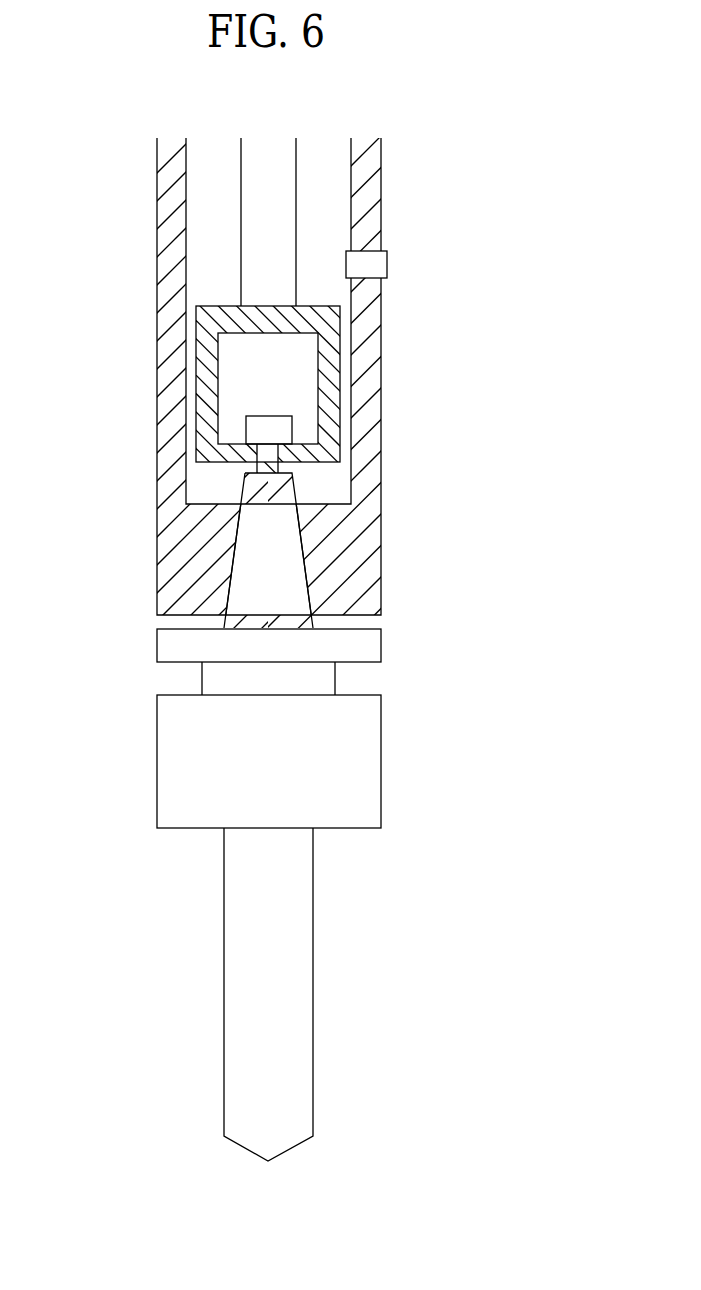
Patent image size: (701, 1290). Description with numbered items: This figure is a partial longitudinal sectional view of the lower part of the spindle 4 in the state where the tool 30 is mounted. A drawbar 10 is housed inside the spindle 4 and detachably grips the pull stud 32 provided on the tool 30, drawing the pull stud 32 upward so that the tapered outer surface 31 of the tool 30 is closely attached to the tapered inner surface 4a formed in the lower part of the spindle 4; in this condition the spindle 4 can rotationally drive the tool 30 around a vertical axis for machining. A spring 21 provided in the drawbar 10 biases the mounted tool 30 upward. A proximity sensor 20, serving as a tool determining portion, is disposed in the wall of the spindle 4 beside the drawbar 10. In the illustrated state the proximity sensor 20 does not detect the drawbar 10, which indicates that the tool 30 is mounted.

The spindle 4 is at (381, 407).
The tapered inner surface 4a is at (307, 548).
The drawbar 10 is at (196, 360).
The proximity sensor 20 is at (386, 255).
The spring 21 is at (241, 213).
The tool 30 is at (140, 756).
The tapered outer surface 31 is at (233, 557).
The pull stud 32 is at (246, 430).